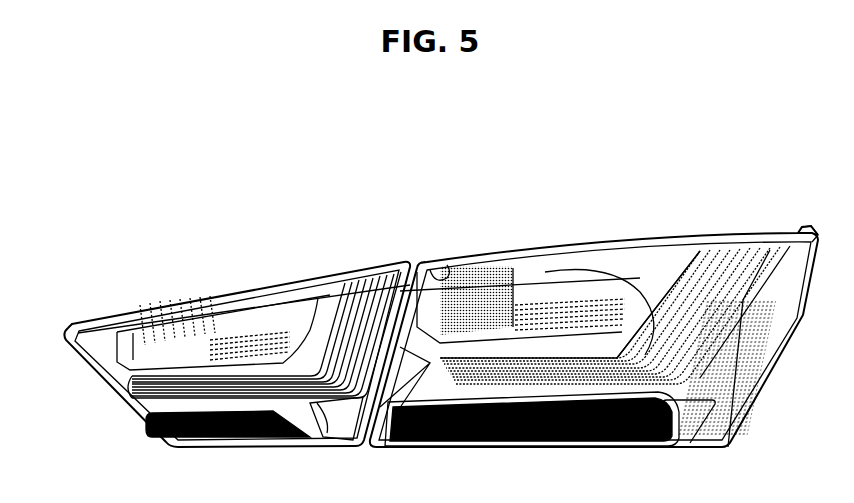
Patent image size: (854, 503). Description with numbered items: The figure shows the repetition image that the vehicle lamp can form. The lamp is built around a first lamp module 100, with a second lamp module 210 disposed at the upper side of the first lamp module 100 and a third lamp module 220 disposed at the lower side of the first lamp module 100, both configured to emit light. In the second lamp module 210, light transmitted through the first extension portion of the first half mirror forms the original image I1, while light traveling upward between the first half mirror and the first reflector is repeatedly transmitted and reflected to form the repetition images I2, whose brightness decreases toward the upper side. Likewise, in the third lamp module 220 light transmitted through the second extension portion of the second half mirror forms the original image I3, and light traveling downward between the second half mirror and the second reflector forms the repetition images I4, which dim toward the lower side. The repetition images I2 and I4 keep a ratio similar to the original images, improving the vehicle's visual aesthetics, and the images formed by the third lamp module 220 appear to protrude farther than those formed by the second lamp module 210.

The first lamp module 100 is at (140, 386).
The second lamp module 210 is at (235, 345).
The third lamp module 220 is at (150, 406).
The original image I1 is at (447, 262).
The repetition images I2 is at (487, 260).
The original image I3 is at (708, 250).
The repetition images I4 is at (833, 222).